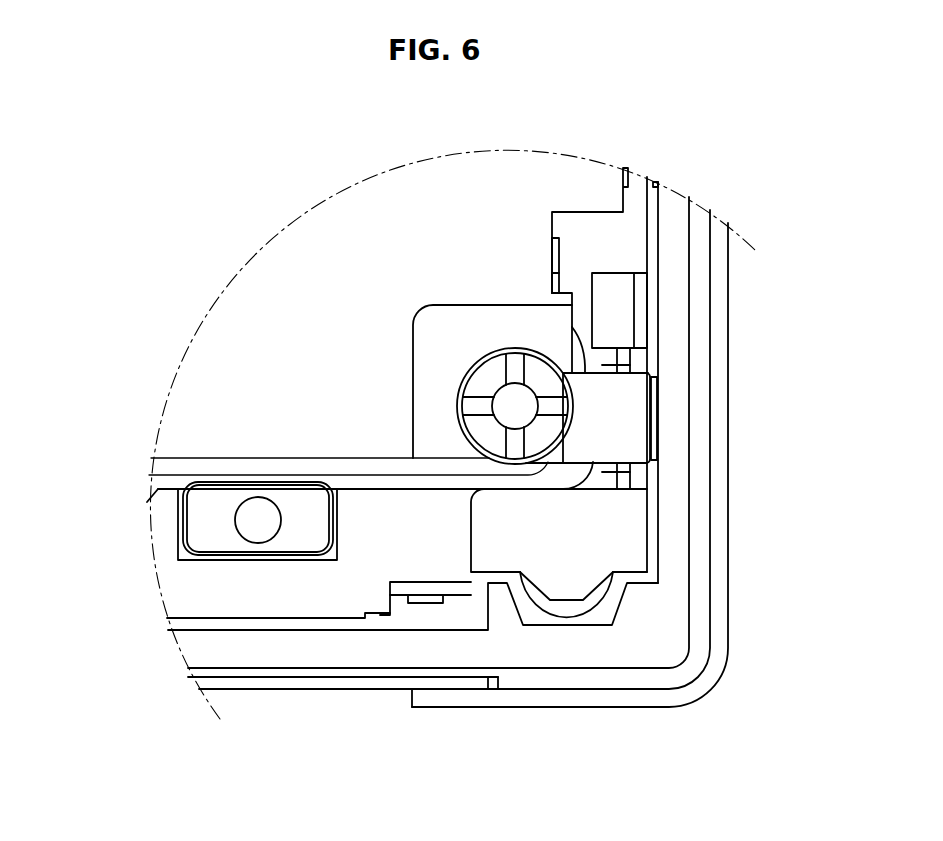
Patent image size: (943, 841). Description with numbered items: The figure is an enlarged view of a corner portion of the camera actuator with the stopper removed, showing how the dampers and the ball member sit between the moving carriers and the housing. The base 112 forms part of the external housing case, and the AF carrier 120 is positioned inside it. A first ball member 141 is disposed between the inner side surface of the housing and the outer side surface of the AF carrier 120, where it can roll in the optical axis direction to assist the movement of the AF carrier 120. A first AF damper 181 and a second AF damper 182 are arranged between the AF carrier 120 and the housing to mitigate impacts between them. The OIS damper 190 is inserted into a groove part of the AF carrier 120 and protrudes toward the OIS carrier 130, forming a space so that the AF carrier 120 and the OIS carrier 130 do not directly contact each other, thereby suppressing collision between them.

The base 112 is at (679, 522).
The AF carrier 120 is at (620, 328).
The OIS carrier 130 is at (300, 318).
The first ball member 141 is at (572, 615).
The first AF damper 181 is at (510, 400).
The second AF damper 182 is at (643, 413).
The OIS damper 190 is at (207, 527).